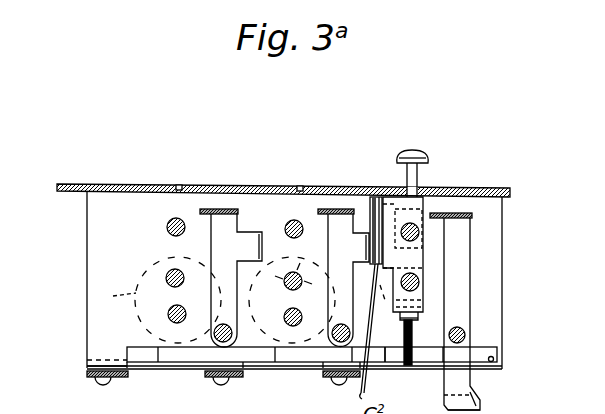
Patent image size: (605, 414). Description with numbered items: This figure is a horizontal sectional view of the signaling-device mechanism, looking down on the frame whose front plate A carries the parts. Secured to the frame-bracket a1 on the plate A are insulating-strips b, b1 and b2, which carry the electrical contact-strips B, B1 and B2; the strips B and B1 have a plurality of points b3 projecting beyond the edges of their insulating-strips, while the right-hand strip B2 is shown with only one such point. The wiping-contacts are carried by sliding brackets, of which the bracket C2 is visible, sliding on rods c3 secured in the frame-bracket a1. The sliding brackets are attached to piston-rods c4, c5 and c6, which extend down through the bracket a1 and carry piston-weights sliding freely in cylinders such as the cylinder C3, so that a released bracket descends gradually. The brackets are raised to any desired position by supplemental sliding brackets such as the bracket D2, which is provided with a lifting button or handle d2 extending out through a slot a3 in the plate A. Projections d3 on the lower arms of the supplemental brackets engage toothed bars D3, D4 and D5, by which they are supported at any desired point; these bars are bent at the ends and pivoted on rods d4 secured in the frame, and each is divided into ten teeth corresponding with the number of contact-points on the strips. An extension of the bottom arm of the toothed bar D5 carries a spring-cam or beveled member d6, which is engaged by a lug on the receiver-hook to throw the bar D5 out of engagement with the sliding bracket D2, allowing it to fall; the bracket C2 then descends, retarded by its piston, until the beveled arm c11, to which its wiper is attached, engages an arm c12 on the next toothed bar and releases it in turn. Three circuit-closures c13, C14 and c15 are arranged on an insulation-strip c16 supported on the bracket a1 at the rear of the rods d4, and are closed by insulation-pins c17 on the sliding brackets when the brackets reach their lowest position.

The front plate A is at (233, 187).
The slots a3 is at (183, 186).
The frame-bracket a1 is at (112, 248).
The insulating-strip b is at (86, 373).
The electrical contact-strip B is at (92, 380).
The points b3 is at (128, 379).
The circuit-closure c13 is at (180, 356).
The electrical contact-strip B1 is at (206, 378).
The insulating-strip b1 is at (237, 375).
The electrical contact-strip B2 is at (349, 381).
The circuit-closure C14 is at (316, 372).
The insulating-strip b2 is at (388, 398).
The circuit-closure c15 is at (380, 368).
The toothed bar D3 is at (238, 211).
The toothed bar D4 is at (343, 271).
The arm c12 is at (260, 252).
The rods d4 is at (276, 277).
The piston-rod c5 is at (167, 227).
The rods c3 is at (179, 271).
The cylinder C3 is at (115, 292).
The piston-rod c4 is at (167, 315).
The insulation-strip c16 is at (478, 342).
The sliding bracket C2 is at (423, 261).
The piston-rod c6 is at (401, 318).
The lifting button or handle d2 is at (440, 188).
The supplemental sliding bracket D2 is at (485, 173).
The beveled arm c11 is at (370, 222).
The toothed bar D5 is at (447, 222).
The projections d3 is at (424, 222).
The insulation-pins c17 is at (465, 332).
The spring-cam or beveled member d6 is at (481, 401).